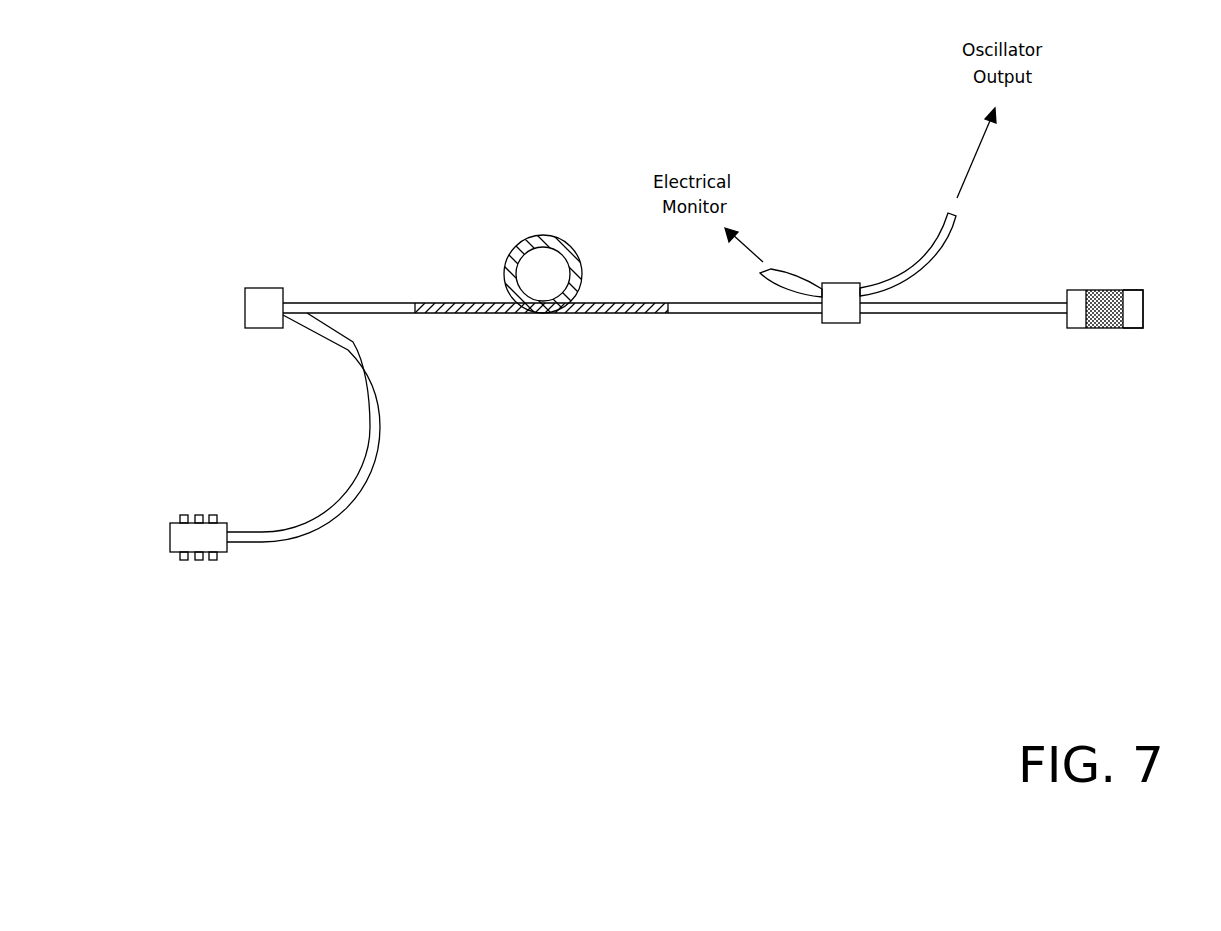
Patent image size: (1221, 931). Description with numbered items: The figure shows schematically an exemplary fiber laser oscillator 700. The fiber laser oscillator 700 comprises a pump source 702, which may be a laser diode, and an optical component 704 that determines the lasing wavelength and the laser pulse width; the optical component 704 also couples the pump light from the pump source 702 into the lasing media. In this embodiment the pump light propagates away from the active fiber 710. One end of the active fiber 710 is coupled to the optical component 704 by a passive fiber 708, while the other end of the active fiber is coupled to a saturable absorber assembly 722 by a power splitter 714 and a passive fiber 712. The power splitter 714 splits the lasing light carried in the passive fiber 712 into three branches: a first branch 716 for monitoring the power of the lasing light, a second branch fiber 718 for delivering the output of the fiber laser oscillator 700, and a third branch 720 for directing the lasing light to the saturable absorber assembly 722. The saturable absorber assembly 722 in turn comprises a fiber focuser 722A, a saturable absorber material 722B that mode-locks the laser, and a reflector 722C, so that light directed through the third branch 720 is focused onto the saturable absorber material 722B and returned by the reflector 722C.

The fiber laser oscillator 700 is at (317, 135).
The pump source 702 is at (173, 557).
The optical component 704 is at (275, 287).
The passive fiber 708 is at (345, 303).
The active fiber 710 is at (522, 248).
The passive fiber 712 is at (718, 315).
The power splitter 714 is at (842, 326).
The first branch 716 is at (803, 287).
The second branch fiber 718 is at (897, 272).
The third branch 720 is at (972, 303).
The saturable absorber assembly 722 is at (1129, 314).
The fiber focuser 722A is at (1075, 330).
The saturable absorber material 722B is at (1112, 330).
The reflector 722C is at (1143, 320).